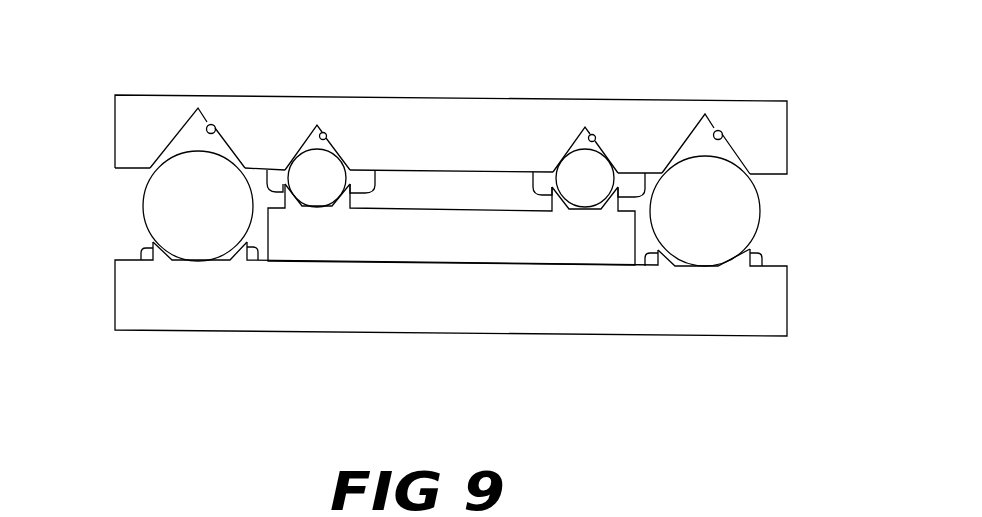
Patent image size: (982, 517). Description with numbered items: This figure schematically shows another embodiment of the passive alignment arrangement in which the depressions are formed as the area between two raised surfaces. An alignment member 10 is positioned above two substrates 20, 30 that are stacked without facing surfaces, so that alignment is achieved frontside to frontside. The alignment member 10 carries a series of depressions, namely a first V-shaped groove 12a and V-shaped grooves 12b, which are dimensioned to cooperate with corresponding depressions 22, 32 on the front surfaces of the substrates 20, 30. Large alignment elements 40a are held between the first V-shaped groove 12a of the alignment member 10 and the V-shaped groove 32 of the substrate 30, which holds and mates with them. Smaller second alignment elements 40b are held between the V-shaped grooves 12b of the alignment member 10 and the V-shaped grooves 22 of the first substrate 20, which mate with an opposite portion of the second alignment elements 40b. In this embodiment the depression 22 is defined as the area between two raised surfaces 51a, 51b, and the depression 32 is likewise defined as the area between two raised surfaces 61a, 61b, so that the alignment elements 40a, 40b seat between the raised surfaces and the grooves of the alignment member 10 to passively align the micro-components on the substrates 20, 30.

The alignment member 10 is at (437, 134).
The first substrate 20 is at (437, 249).
The second substrate 30 is at (437, 314).
The first V-shaped groove 12a is at (214, 126).
The V-shaped groove 12b is at (325, 133).
The V-shaped groove 22 is at (316, 207).
The V-shaped groove 32 is at (185, 262).
The alignment element 40a is at (186, 224).
The second alignment element 40b is at (306, 191).
The raised surface 51a is at (267, 172).
The raised surface 51b is at (376, 172).
The raised surface 61a is at (153, 251).
The raised surface 61b is at (257, 257).